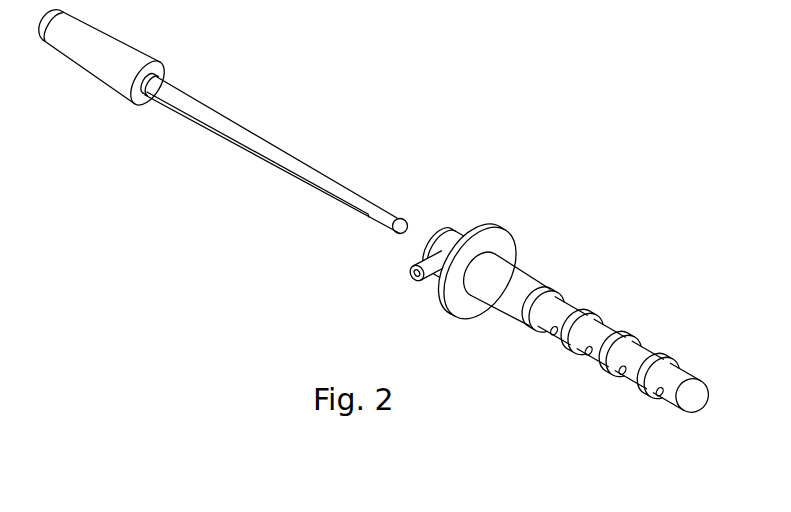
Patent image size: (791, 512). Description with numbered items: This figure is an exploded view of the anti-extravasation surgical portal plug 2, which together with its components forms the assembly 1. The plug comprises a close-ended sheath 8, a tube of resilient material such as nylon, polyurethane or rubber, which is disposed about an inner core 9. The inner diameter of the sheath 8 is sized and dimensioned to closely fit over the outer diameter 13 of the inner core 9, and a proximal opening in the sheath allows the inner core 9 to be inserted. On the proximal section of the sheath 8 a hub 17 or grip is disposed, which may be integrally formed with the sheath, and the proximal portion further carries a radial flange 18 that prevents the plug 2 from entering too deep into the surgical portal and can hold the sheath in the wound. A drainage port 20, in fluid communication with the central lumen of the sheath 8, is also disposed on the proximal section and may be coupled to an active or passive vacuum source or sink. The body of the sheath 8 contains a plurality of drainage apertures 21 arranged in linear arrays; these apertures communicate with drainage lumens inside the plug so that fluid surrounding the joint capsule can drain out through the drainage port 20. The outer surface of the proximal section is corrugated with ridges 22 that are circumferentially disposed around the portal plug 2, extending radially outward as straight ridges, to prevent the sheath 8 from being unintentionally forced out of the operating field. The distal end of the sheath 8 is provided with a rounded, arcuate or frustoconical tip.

The surgical instrument assembly 1 is at (486, 66).
The surgical portal plug 2 is at (718, 410).
The sheath 8 is at (515, 395).
The inner core 9 is at (152, 172).
The outer diameter 13 is at (370, 247).
The hub 17 is at (450, 240).
The radial flange 18 is at (503, 242).
The drainage port 20 is at (414, 279).
The drainage apertures 21 is at (621, 373).
The ridges 22 is at (562, 295).